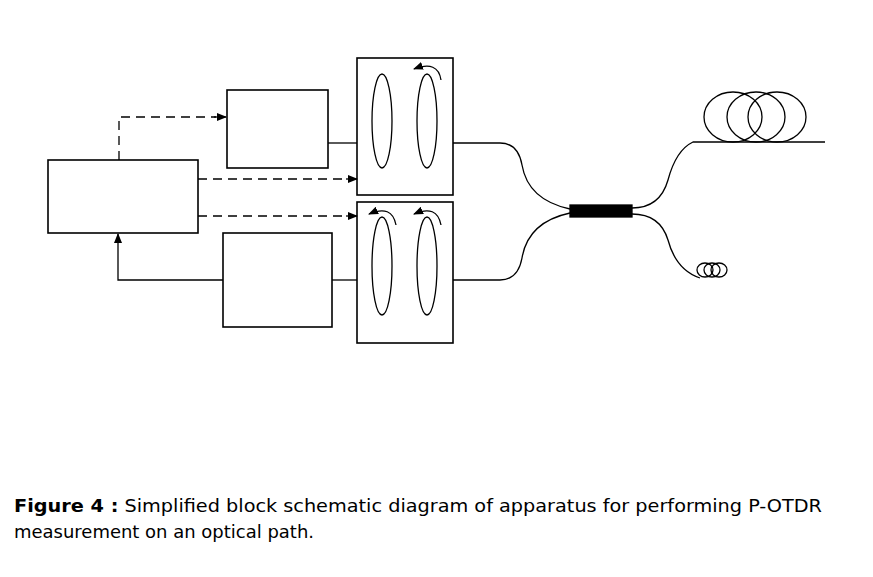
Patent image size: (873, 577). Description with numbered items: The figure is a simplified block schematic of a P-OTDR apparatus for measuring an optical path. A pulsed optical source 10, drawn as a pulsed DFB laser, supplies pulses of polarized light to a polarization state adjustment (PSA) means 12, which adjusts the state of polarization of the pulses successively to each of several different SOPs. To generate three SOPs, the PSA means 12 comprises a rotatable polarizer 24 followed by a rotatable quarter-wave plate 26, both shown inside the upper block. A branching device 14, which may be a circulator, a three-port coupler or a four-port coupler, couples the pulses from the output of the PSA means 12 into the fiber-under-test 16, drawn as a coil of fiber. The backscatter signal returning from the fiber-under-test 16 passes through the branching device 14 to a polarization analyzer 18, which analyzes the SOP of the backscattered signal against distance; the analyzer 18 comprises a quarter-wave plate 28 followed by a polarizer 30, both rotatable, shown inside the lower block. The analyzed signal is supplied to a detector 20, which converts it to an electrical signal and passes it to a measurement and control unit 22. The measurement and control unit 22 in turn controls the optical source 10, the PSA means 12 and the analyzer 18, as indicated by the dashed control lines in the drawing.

The pulsed optical source 10 is at (296, 90).
The polarization state adjustment means 12 is at (418, 110).
The branching device 14 is at (628, 205).
The fiber-under-test 16 is at (792, 143).
The polarization analyzer 18 is at (420, 289).
The detector 20 is at (245, 327).
The measurement and control unit 22 is at (74, 160).
The rotatable polarizer 24 is at (394, 72).
The rotatable quarter-wave plate 26 is at (421, 108).
The quarter-wave plate 28 is at (437, 341).
The polarizer 30 is at (383, 341).